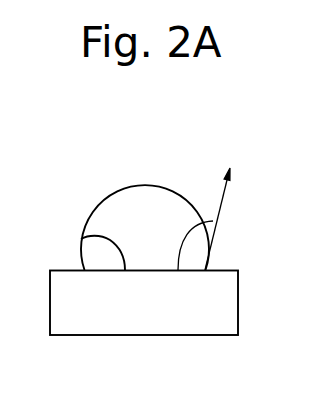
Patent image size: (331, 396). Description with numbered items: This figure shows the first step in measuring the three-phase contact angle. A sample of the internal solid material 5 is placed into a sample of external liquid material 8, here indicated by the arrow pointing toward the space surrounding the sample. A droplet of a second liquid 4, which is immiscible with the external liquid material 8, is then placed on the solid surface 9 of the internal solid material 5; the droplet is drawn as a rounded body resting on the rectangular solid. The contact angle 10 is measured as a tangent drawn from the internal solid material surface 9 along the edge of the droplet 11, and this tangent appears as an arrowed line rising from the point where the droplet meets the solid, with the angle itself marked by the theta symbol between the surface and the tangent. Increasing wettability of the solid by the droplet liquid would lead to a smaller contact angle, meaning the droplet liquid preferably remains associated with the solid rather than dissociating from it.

The droplet of a second liquid 4 is at (107, 200).
The internal solid material 5 is at (152, 315).
The external liquid material 8 is at (200, 147).
The solid surface 9 is at (82, 238).
The contact angle 10 is at (222, 200).
The edge of the droplet 11 is at (210, 251).